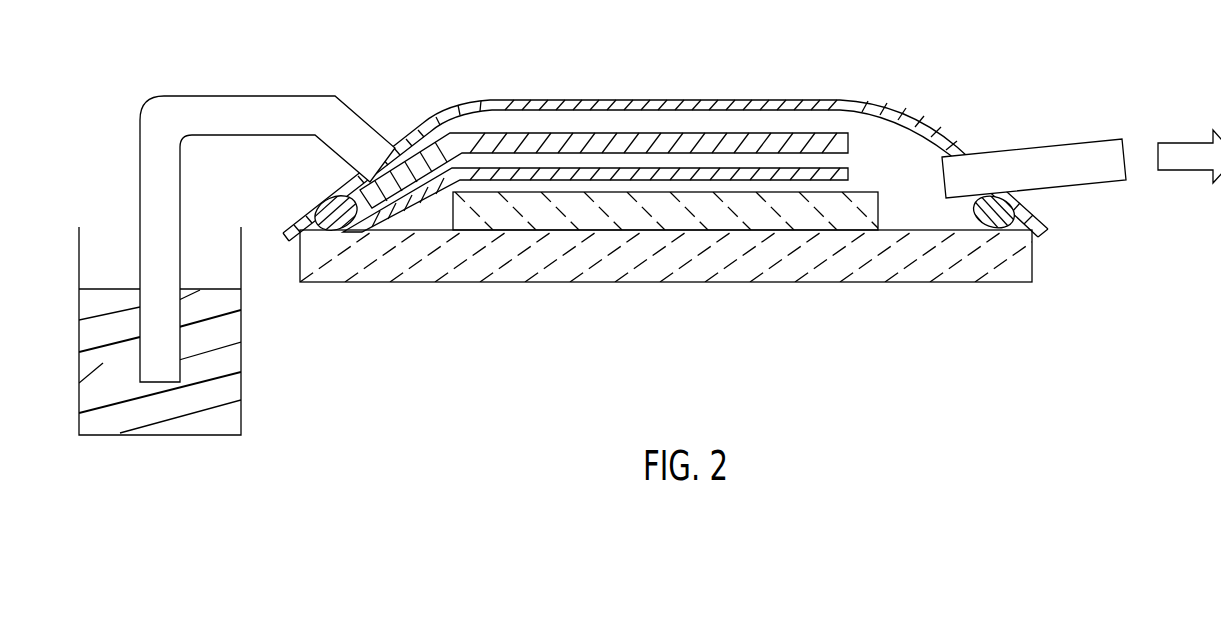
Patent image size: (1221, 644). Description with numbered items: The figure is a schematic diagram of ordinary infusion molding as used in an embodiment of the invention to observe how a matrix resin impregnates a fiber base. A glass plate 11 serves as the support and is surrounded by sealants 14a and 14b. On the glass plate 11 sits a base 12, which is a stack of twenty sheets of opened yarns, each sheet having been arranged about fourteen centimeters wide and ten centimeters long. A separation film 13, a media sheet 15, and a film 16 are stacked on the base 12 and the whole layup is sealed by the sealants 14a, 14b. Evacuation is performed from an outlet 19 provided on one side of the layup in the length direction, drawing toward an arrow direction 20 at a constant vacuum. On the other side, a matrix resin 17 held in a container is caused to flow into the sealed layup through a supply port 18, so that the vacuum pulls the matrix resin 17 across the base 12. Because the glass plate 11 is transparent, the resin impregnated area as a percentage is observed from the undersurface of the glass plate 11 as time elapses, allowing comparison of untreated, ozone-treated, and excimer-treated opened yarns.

The glass plate 11 is at (602, 257).
The base 12 is at (748, 215).
The separation film 13 is at (793, 183).
The sealant 14a is at (346, 217).
The sealant 14b is at (1002, 228).
The media sheet 15 is at (628, 145).
The film 16 is at (713, 105).
The matrix resin 17 is at (100, 363).
The supply port 18 is at (245, 96).
The outlet 19 is at (1033, 150).
The arrow direction 20 is at (1188, 143).